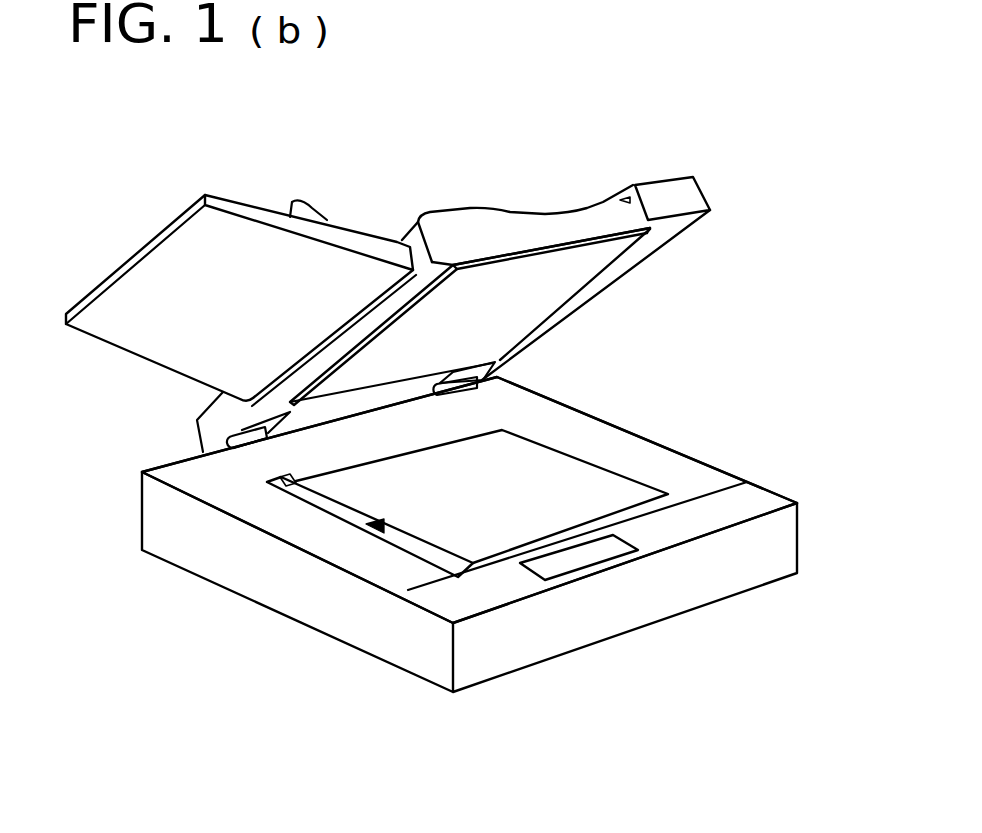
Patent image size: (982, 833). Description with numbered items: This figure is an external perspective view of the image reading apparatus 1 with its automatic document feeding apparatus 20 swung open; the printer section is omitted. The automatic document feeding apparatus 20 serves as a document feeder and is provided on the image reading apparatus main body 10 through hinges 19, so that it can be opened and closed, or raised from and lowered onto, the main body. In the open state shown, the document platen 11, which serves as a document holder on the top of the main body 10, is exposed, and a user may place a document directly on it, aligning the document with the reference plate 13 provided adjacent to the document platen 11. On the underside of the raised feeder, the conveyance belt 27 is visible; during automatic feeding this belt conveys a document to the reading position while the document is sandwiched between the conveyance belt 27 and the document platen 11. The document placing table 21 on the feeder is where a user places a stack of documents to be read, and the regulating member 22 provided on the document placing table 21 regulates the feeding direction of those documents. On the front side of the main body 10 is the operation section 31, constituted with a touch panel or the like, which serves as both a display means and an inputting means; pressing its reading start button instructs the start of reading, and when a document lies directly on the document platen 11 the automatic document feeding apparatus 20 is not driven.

The image reading apparatus 1 is at (760, 248).
The image reading apparatus main body 10 is at (722, 460).
The document platen 11 is at (528, 457).
The reference plate 13 is at (400, 534).
The hinges 19 is at (470, 390).
The automatic document feeding apparatus 20 is at (673, 192).
The document placing table 21 is at (248, 202).
The regulating member 22 is at (313, 212).
The conveyance belt 27 is at (523, 297).
The operation section 31 is at (580, 560).